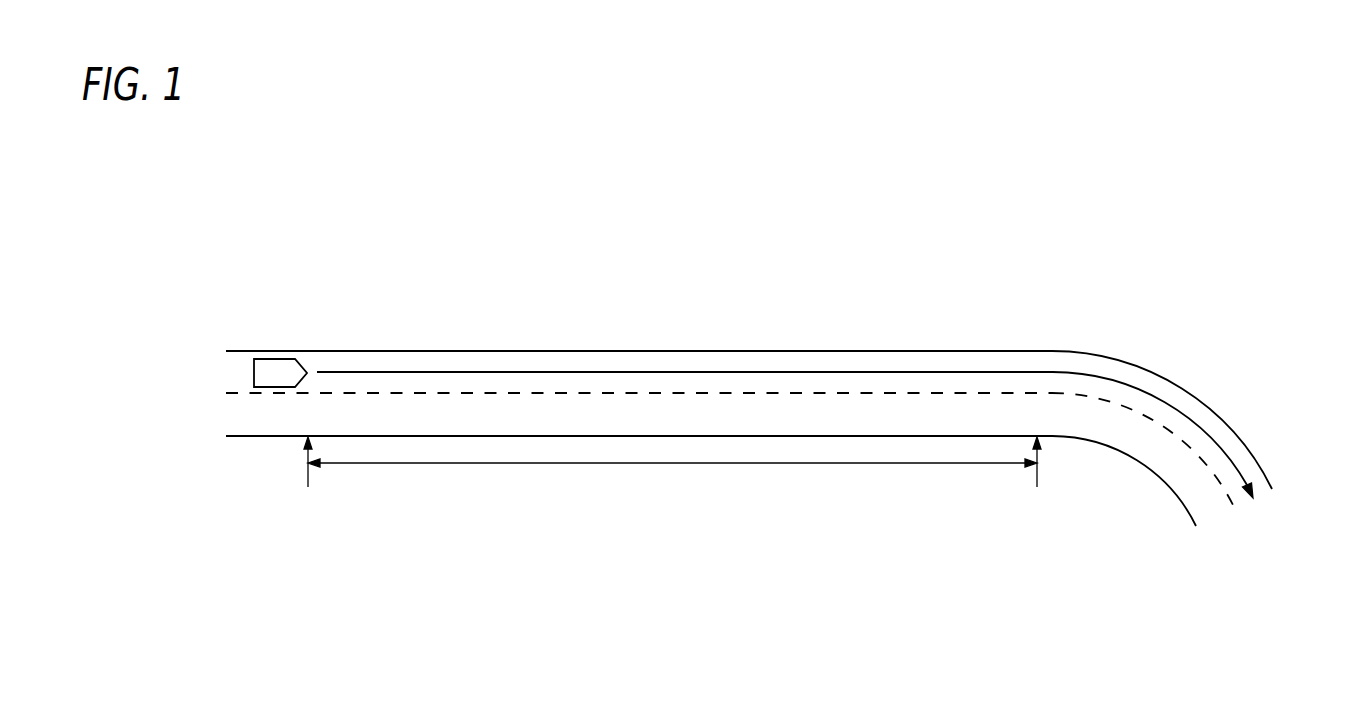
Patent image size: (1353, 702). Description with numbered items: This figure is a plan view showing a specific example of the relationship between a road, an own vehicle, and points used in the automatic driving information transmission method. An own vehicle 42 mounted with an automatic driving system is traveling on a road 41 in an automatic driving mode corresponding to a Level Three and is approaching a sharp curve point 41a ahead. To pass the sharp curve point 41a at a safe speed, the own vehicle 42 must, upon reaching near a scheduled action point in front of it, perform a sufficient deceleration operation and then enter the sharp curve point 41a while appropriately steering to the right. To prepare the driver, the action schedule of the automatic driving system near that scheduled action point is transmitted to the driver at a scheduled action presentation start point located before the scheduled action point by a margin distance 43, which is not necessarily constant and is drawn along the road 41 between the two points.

The road 41 is at (670, 349).
The sharp curve point 41a is at (1188, 380).
The own vehicle 42 is at (277, 358).
The margin distance 43 is at (917, 464).